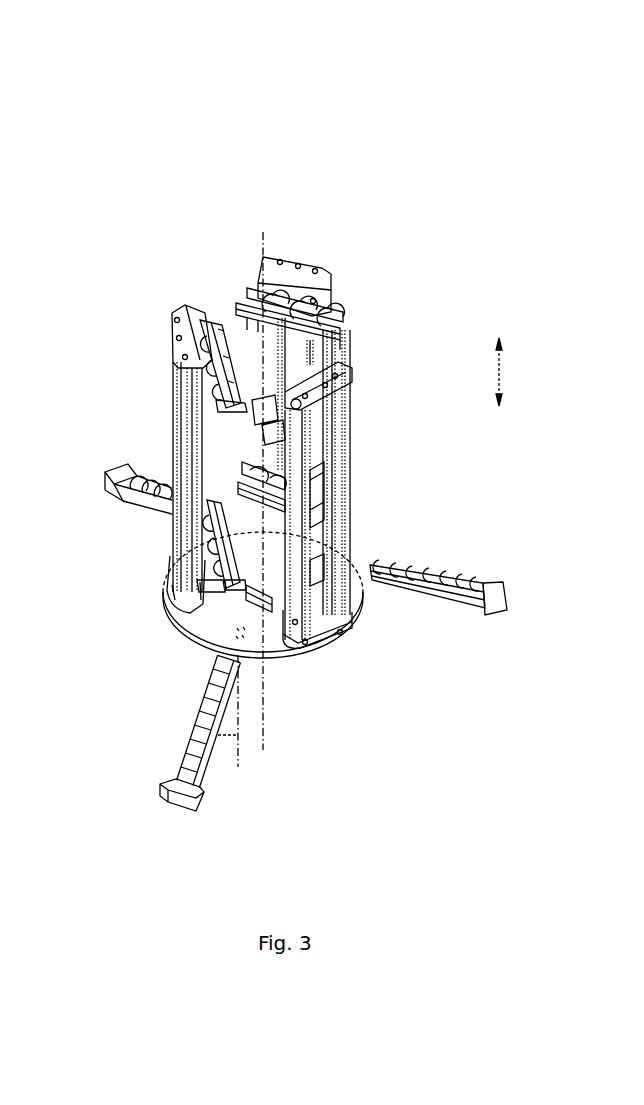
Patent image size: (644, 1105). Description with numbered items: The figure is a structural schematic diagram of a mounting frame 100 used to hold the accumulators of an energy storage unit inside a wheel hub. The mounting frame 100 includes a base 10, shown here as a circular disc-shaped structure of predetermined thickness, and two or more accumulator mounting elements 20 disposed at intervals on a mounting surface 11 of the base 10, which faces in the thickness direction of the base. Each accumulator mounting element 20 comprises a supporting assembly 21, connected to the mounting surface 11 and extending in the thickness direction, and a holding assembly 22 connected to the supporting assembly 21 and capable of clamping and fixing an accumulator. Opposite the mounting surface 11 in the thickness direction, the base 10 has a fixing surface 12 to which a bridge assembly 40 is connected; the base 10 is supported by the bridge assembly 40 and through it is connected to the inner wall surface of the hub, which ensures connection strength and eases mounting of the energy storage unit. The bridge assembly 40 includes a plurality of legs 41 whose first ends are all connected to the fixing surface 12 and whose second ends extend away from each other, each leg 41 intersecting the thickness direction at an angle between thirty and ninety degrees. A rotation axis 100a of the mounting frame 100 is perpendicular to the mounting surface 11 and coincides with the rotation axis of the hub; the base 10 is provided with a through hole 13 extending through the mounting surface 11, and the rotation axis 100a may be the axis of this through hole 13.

The mounting frame 100 is at (292, 62).
The rotation axis 100a is at (263, 232).
The base 10 is at (194, 623).
The mounting surface 11 is at (358, 543).
The fixing surface 12 is at (327, 654).
The through hole 13 is at (240, 602).
The accumulator mounting element 20 is at (66, 282).
The supporting assembly 21 is at (178, 407).
The holding assembly 22 is at (210, 323).
The bridge assembly 40 is at (306, 643).
The leg 41 is at (358, 823).